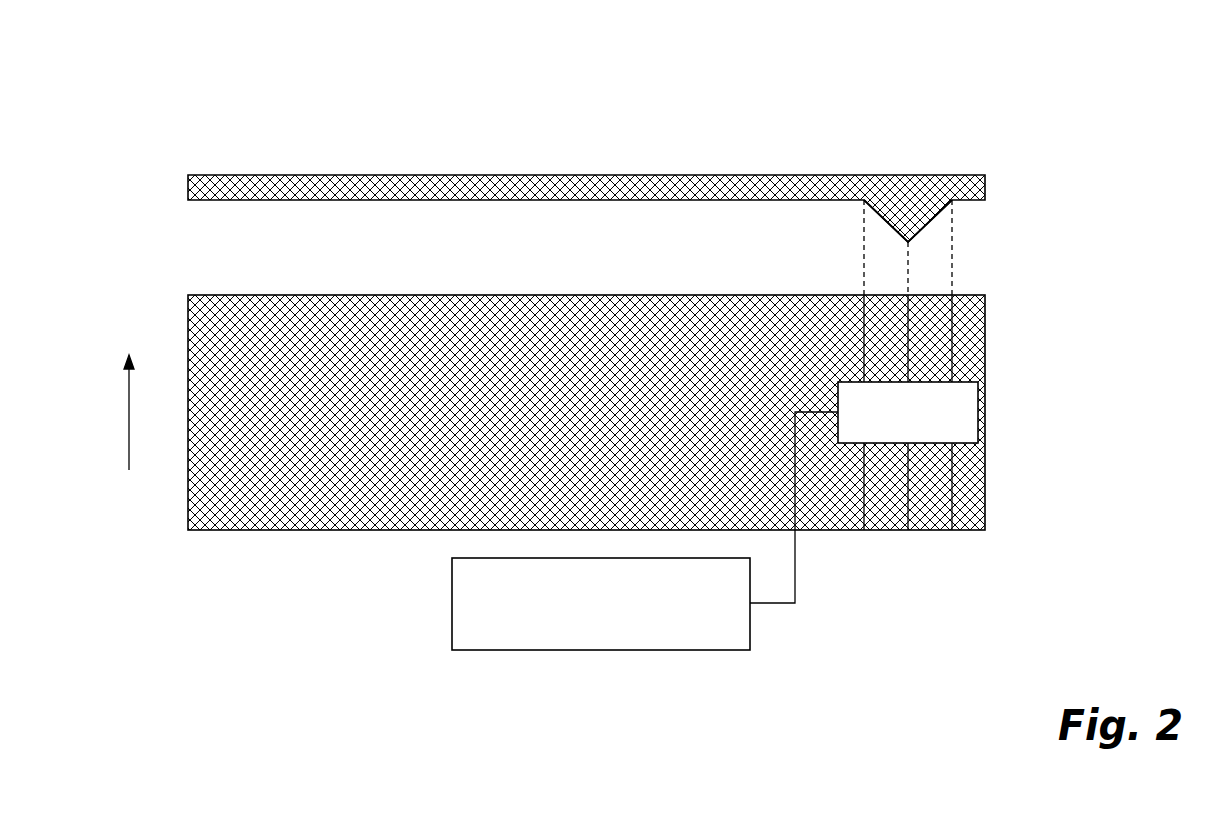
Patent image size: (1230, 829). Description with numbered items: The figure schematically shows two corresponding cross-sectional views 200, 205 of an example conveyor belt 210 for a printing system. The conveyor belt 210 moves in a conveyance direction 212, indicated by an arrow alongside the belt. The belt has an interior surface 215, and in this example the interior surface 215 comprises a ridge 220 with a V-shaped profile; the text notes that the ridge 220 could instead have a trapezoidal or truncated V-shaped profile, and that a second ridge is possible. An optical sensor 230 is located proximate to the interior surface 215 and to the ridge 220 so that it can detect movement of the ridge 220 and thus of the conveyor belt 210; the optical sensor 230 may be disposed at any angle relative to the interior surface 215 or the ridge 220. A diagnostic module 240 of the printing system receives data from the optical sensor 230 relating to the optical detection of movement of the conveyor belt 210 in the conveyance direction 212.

The cross-sectional view 200 is at (1003, 175).
The cross-sectional view 205 is at (1003, 295).
The conveyor belt 210 is at (903, 108).
The conveyance direction 212 is at (128, 428).
The interior surface 215 is at (460, 200).
The ridge 220 is at (883, 217).
The optical sensor 230 is at (908, 412).
The diagnostic module 240 is at (645, 531).